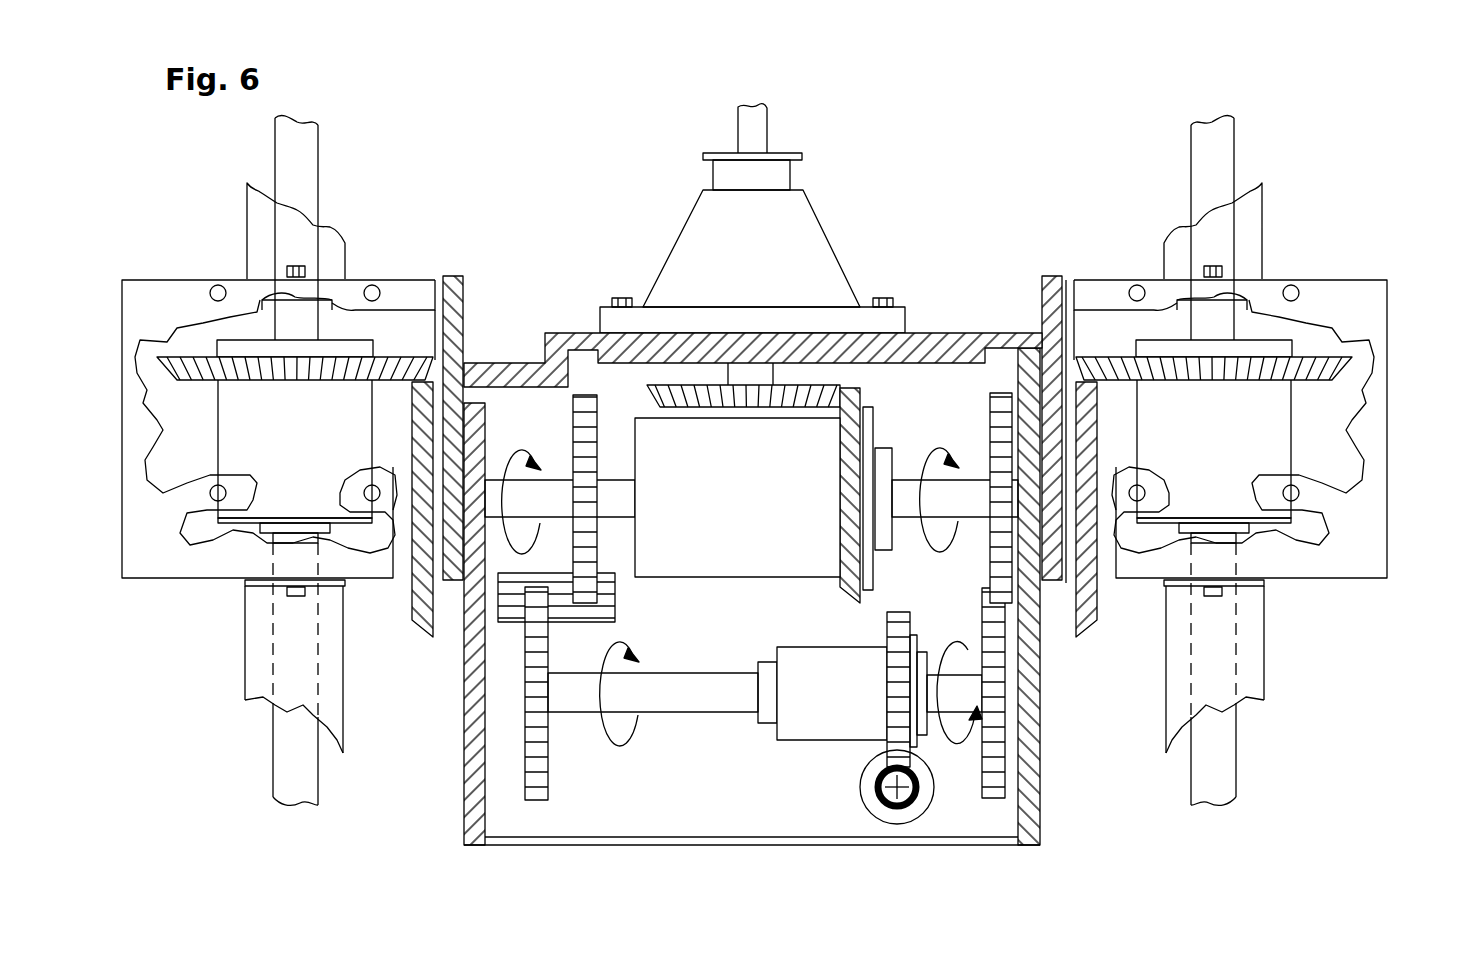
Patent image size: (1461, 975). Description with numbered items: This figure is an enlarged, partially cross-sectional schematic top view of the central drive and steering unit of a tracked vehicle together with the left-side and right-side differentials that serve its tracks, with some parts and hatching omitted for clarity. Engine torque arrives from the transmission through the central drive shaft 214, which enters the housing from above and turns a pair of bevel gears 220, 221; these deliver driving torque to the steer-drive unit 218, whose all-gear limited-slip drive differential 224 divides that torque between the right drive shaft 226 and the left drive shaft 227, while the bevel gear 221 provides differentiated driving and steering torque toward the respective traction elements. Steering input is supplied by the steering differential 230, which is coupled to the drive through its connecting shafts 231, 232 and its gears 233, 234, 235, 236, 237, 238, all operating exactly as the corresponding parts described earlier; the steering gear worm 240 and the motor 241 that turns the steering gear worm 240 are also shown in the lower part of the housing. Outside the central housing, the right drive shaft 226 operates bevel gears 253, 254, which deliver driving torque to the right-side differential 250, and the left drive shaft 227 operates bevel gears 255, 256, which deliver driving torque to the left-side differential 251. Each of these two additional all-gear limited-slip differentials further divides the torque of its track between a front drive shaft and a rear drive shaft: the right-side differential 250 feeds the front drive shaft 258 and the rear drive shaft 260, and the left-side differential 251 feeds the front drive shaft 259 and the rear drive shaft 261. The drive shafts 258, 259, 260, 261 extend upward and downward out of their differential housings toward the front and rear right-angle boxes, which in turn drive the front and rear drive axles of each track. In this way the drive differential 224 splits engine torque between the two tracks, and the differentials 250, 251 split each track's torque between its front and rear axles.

The central drive shaft 214 is at (757, 127).
The steer-drive unit 218 is at (925, 337).
The bevel gear 220 is at (840, 378).
The bevel gear 221 is at (848, 590).
The all-gear limited-slip drive differential 224 is at (750, 506).
The right drive shaft 226 is at (903, 497).
The left drive shaft 227 is at (618, 483).
The steering differential 230 is at (803, 713).
The connecting shaft 231 is at (735, 670).
The connecting shaft 232 is at (970, 690).
The gear 233 is at (893, 742).
The gear 234 is at (612, 603).
The gear 235 is at (1000, 543).
The gear 236 is at (597, 540).
The gear 237 is at (997, 623).
The gear 238 is at (538, 773).
The steering gear worm 240 is at (920, 790).
The motor 241 is at (863, 793).
The right-side differential 250 is at (1183, 440).
The left-side differential 251 is at (257, 446).
The bevel gear 253 is at (1083, 623).
The bevel gear 254 is at (1372, 355).
The bevel gear 255 is at (425, 613).
The bevel gear 256 is at (387, 362).
The front drive shaft 258 is at (1197, 165).
The front drive shaft 259 is at (305, 155).
The rear drive shaft 260 is at (1218, 753).
The rear drive shaft 261 is at (295, 747).